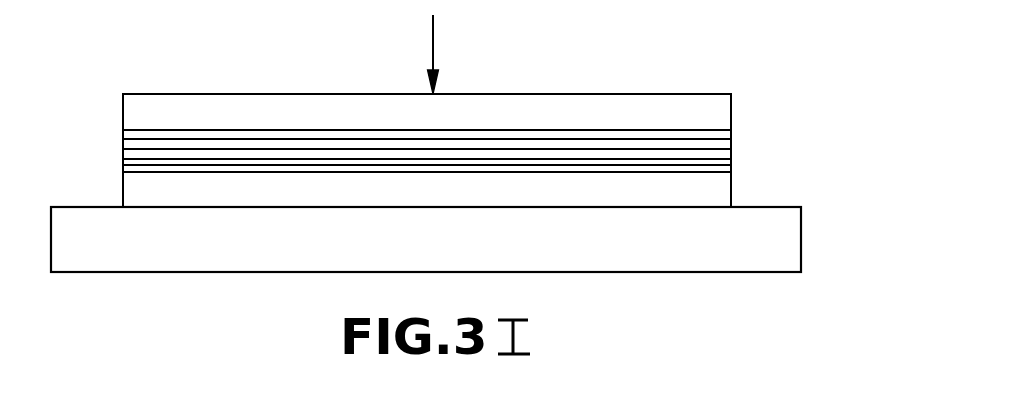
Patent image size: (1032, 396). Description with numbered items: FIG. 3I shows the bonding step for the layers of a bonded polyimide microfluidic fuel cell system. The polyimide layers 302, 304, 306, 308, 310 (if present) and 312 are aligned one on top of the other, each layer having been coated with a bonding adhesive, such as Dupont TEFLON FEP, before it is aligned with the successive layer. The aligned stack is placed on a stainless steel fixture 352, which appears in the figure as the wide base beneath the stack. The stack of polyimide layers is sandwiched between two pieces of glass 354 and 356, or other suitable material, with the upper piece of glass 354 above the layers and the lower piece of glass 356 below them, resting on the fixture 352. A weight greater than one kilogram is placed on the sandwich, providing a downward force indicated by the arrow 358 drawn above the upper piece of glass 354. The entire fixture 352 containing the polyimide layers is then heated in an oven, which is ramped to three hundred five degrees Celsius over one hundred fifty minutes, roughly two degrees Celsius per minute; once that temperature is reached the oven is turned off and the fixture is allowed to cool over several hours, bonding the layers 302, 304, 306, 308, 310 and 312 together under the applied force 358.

The stainless steel fixture 352 is at (778, 258).
The piece of glass 354 is at (124, 116).
The piece of glass 356 is at (124, 190).
The arrow 358 is at (433, 40).
The polyimide layer 302 is at (743, 178).
The polyimide layer 304 is at (505, 123).
The polyimide layer 306 is at (529, 128).
The polyimide layer 308 is at (477, 159).
The polyimide layer 310 is at (505, 159).
The polyimide layer 312 is at (529, 159).